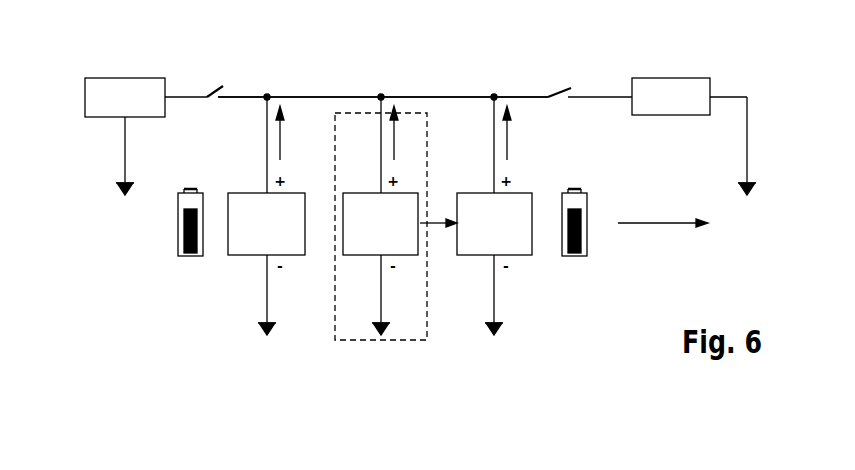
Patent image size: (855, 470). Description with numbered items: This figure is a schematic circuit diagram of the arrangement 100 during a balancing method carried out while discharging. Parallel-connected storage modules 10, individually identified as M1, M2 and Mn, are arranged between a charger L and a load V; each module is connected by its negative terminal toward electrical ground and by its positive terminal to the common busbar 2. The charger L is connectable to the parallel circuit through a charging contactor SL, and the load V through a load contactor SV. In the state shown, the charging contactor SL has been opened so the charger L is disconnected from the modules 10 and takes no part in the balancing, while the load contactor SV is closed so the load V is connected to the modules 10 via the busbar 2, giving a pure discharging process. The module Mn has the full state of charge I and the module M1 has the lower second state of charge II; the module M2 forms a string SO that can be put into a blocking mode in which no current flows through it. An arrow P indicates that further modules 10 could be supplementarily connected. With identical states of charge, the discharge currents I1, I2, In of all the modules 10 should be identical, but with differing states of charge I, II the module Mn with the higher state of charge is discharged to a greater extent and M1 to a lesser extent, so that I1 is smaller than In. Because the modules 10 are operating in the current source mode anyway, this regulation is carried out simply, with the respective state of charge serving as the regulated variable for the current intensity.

The arrangement 100 is at (140, 51).
The busbar 2 is at (437, 96).
The storage modules 10 is at (380, 235).
The charging contactor SL is at (209, 80).
The load contactor SV is at (559, 80).
The charger L is at (125, 136).
The load V is at (694, 136).
The module M1 is at (266, 264).
The module M2 is at (380, 264).
The module Mn is at (494, 264).
The string SO is at (428, 290).
The arrow P is at (564, 213).
The discharge current I1 is at (289, 133).
The discharge current I2 is at (403, 133).
The discharge current In is at (516, 133).
The state of charge I is at (574, 188).
The state of charge II is at (187, 188).